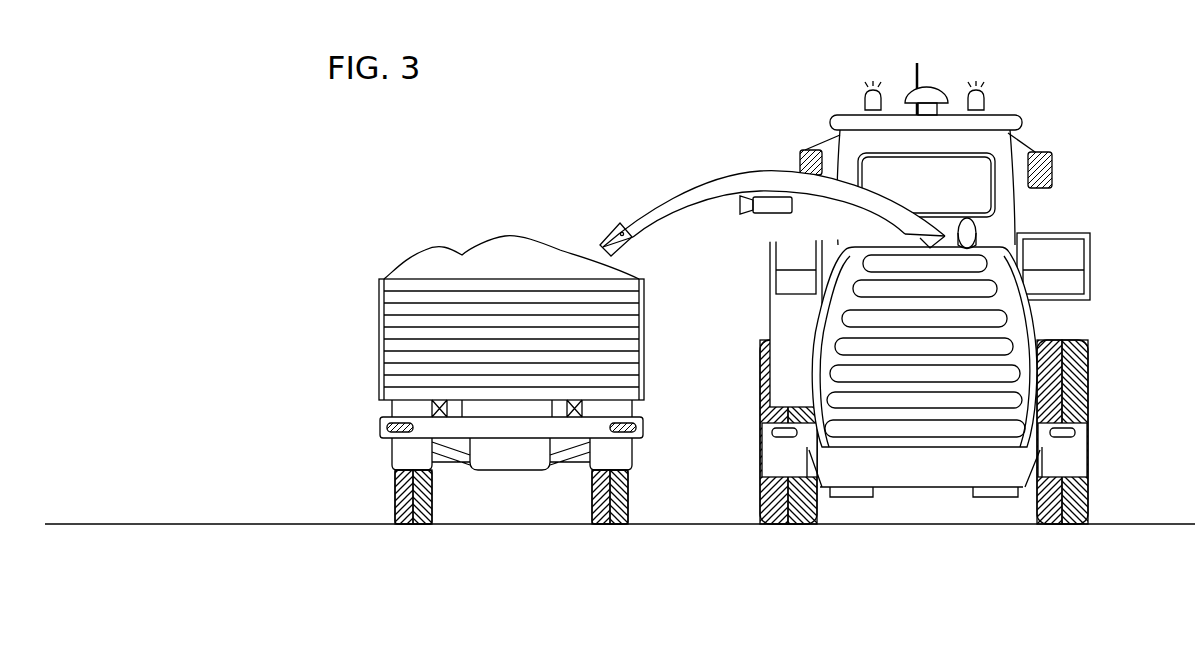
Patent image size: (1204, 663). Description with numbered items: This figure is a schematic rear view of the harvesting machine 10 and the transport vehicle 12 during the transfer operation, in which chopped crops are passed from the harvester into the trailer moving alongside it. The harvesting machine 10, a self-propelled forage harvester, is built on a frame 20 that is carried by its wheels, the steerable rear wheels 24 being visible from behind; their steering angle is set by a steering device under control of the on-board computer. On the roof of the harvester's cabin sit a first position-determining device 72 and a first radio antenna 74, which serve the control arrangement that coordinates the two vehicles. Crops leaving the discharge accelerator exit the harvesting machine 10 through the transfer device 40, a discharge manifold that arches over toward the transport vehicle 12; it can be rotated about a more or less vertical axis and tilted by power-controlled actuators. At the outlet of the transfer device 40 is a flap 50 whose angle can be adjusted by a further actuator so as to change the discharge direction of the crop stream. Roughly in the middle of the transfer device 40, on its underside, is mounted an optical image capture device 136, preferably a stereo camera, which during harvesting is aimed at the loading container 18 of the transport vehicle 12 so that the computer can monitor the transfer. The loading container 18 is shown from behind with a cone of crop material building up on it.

The harvesting machine 10 is at (928, 572).
The transport vehicle 12 is at (516, 572).
The loading container 18 is at (645, 320).
The frame 20 is at (1020, 300).
The rear wheels 24 is at (762, 412).
The transfer device 40 is at (678, 197).
The flap 50 is at (624, 243).
The first position-determining device 72 is at (932, 97).
The first radio antenna 74 is at (915, 78).
The optical image capture device 136 is at (770, 197).